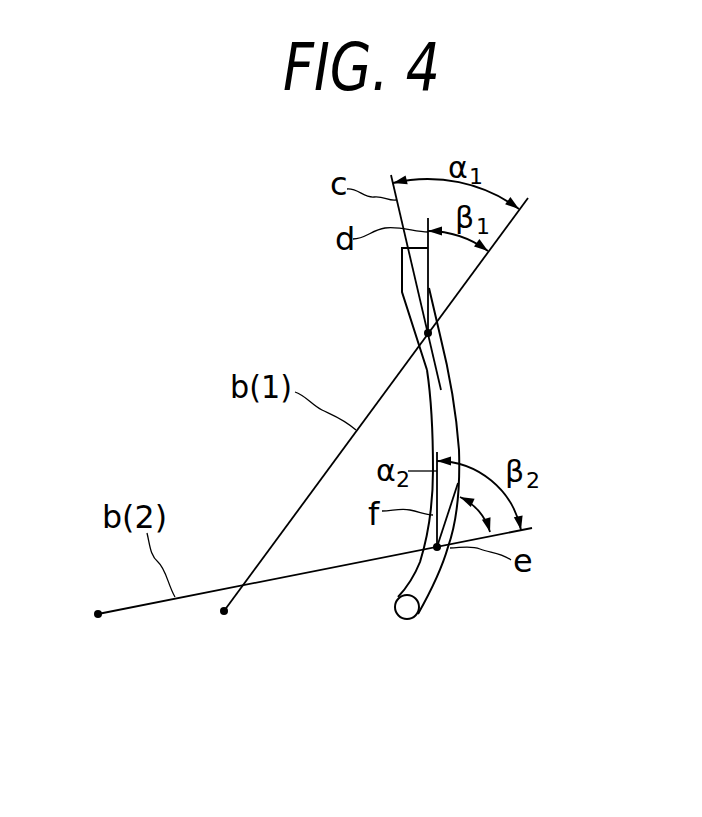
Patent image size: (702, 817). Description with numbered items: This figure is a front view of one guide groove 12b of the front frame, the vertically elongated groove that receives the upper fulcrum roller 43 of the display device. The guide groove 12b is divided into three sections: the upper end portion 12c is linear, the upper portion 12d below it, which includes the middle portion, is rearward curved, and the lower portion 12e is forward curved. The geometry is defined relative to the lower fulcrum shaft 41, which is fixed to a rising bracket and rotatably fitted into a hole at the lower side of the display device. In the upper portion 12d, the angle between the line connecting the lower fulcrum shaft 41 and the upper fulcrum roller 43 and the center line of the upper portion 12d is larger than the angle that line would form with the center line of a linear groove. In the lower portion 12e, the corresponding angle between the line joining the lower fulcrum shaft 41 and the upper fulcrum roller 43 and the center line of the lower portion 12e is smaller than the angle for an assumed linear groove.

The guide groove 12b is at (478, 451).
The upper end portion 12c is at (406, 273).
The upper portion 12d is at (449, 372).
The lower portion 12e is at (423, 590).
The lower fulcrum shaft 41 is at (98, 614).
The upper fulcrum roller 43 is at (428, 333).